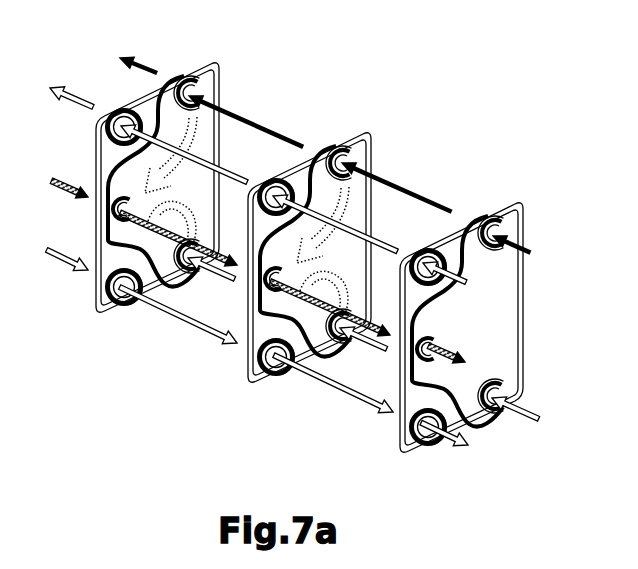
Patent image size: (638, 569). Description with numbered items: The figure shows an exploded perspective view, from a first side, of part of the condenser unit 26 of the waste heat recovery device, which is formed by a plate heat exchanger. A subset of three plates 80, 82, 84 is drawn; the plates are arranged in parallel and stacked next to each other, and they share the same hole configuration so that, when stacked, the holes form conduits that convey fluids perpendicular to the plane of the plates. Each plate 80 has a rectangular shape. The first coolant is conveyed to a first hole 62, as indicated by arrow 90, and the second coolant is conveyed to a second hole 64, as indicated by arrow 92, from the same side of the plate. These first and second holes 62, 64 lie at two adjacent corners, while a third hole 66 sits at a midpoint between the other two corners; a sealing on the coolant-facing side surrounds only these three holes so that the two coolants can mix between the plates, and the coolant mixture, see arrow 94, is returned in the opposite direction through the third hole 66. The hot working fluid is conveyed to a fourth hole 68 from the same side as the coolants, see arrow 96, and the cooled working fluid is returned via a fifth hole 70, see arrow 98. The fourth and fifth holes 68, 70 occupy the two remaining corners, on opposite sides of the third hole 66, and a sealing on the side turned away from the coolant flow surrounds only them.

The condenser unit 26 is at (445, 70).
The plate 84 is at (220, 65).
The plate 82 is at (373, 133).
The plate 80 is at (524, 290).
The fourth hole 68 is at (433, 251).
The first hole 62 is at (503, 223).
The third hole 66 is at (433, 334).
The second hole 64 is at (503, 388).
The fifth hole 70 is at (421, 440).
The arrow 90 is at (531, 248).
The arrow 96 is at (458, 268).
The arrow 94 is at (460, 358).
The arrow 92 is at (530, 418).
The arrow 98 is at (463, 443).